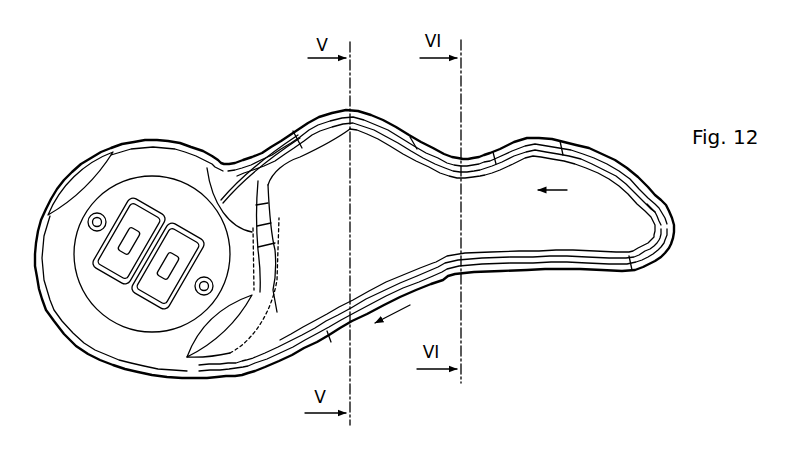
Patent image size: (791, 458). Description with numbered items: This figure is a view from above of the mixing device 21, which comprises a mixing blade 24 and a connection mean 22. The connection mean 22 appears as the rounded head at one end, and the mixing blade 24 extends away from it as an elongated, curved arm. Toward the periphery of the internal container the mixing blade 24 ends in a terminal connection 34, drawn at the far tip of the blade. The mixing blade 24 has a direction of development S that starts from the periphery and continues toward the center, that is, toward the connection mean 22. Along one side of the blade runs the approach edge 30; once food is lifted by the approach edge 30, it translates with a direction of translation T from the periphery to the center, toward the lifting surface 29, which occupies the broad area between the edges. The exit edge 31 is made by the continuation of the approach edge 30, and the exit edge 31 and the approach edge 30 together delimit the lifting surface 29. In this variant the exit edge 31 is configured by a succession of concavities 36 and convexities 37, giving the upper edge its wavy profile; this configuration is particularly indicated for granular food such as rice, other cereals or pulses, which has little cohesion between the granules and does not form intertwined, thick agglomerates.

The mixing device 21 is at (599, 93).
The connection mean 22 is at (123, 139).
The mixing blade 24 is at (603, 133).
The lifting surface 29 is at (513, 236).
The approach edge 30 is at (573, 267).
The exit edge 31 is at (385, 118).
The terminal connection 34 is at (683, 230).
The concavities 36 is at (478, 156).
The convexities 37 is at (295, 130).
The direction of development S is at (558, 191).
The direction of translation T is at (393, 317).